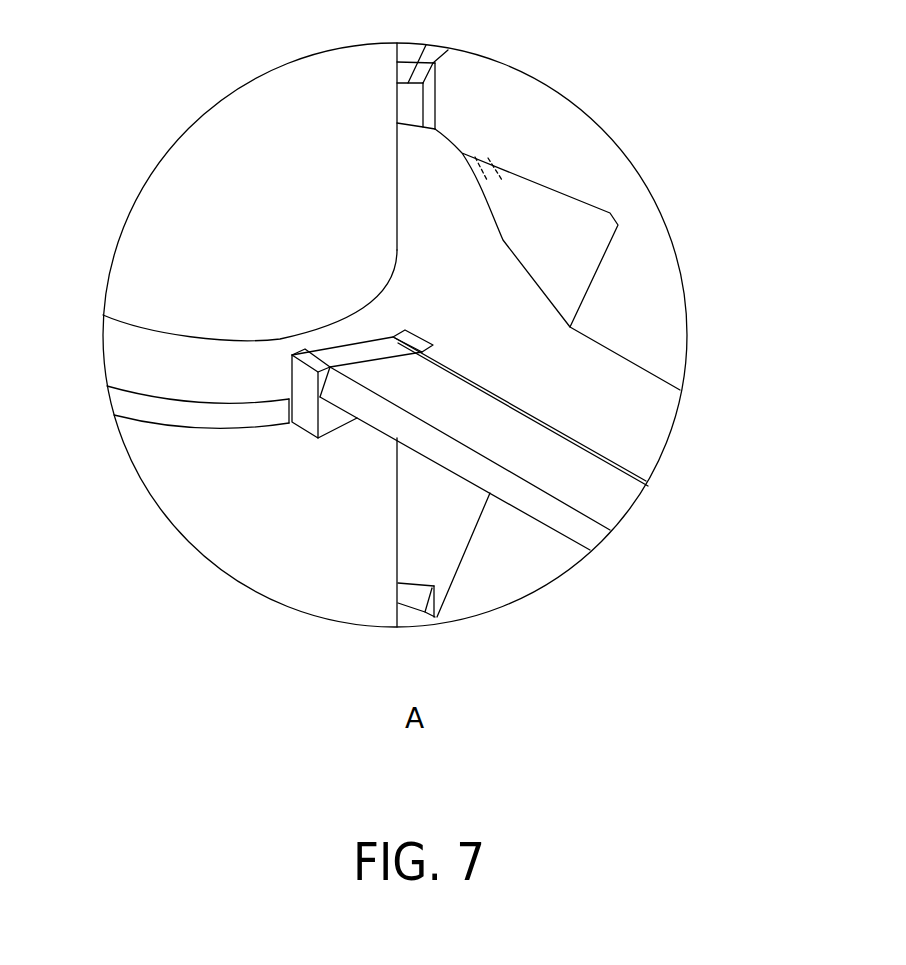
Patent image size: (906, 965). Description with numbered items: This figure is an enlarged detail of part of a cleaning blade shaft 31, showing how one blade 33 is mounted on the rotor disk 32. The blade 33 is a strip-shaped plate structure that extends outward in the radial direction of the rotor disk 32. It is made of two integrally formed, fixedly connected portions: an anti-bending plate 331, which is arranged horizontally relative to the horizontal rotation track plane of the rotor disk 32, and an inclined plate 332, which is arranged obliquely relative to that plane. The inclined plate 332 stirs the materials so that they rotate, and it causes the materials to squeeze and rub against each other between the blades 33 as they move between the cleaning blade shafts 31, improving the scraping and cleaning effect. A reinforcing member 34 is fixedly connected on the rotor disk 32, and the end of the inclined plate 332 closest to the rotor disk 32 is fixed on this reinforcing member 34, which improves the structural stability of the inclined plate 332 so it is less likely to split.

The cleaning blade shaft 31 is at (188, 238).
The rotor disk 32 is at (145, 373).
The blade 33 is at (545, 443).
The anti-bending plate 331 is at (620, 400).
The inclined plate 332 is at (612, 495).
The reinforcing member 34 is at (310, 410).